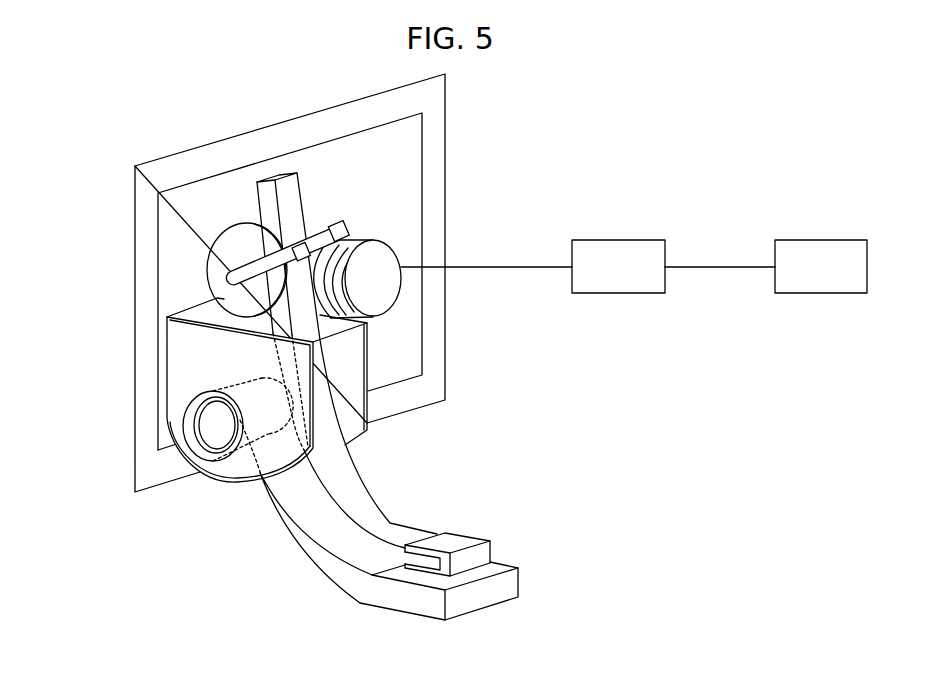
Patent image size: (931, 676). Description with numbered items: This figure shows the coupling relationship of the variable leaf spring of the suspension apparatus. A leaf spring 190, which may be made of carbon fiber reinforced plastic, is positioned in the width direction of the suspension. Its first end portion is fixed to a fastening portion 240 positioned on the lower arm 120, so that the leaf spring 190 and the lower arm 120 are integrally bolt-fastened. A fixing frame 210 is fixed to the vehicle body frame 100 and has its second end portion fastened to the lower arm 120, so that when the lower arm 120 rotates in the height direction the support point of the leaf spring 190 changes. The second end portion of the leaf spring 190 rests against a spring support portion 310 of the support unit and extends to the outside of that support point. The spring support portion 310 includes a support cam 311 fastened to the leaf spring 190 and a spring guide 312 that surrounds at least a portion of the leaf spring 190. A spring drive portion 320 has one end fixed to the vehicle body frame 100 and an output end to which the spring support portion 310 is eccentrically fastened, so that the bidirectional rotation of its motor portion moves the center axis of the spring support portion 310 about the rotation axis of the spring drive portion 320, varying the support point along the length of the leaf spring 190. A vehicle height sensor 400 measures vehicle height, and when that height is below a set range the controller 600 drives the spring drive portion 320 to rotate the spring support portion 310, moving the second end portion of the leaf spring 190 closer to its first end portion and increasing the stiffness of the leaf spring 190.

The vehicle body frame 100 is at (145, 233).
The lower arm 120 is at (305, 540).
The leaf spring 190 is at (357, 487).
The fixing frame 210 is at (177, 392).
The fastening portion 240 is at (470, 568).
The spring support portion 310 is at (288, 210).
The support cam 311 is at (207, 267).
The spring guide 312 is at (347, 224).
The spring drive portion 320 is at (390, 238).
The vehicle height sensor 400 is at (820, 240).
The controller 600 is at (620, 240).